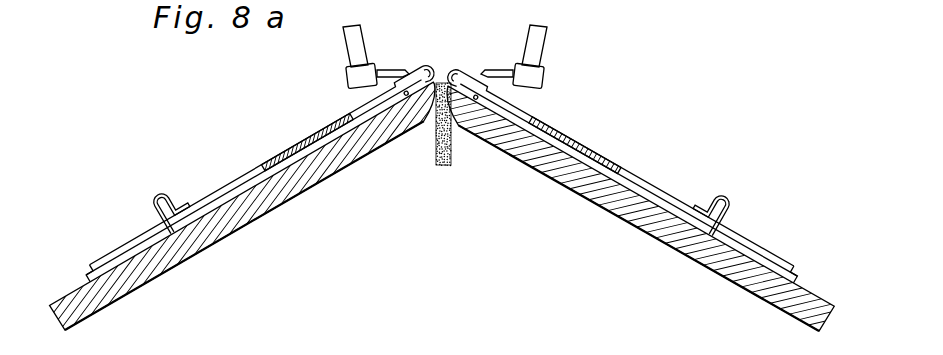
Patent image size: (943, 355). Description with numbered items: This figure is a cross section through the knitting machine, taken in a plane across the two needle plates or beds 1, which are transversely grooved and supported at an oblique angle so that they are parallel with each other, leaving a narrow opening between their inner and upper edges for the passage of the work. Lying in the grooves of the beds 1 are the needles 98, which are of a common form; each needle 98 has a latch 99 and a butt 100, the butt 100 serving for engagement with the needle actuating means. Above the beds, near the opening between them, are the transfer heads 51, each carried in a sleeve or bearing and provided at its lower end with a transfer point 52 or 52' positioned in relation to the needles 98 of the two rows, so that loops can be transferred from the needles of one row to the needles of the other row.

The needle plate or bed 1 is at (281, 203).
The needle 98 is at (237, 179).
The latch 99 is at (461, 69).
The butt 100 is at (176, 180).
The transfer head 51 is at (353, 46).
The transfer point 52 is at (497, 56).
The transfer point 52' is at (393, 56).